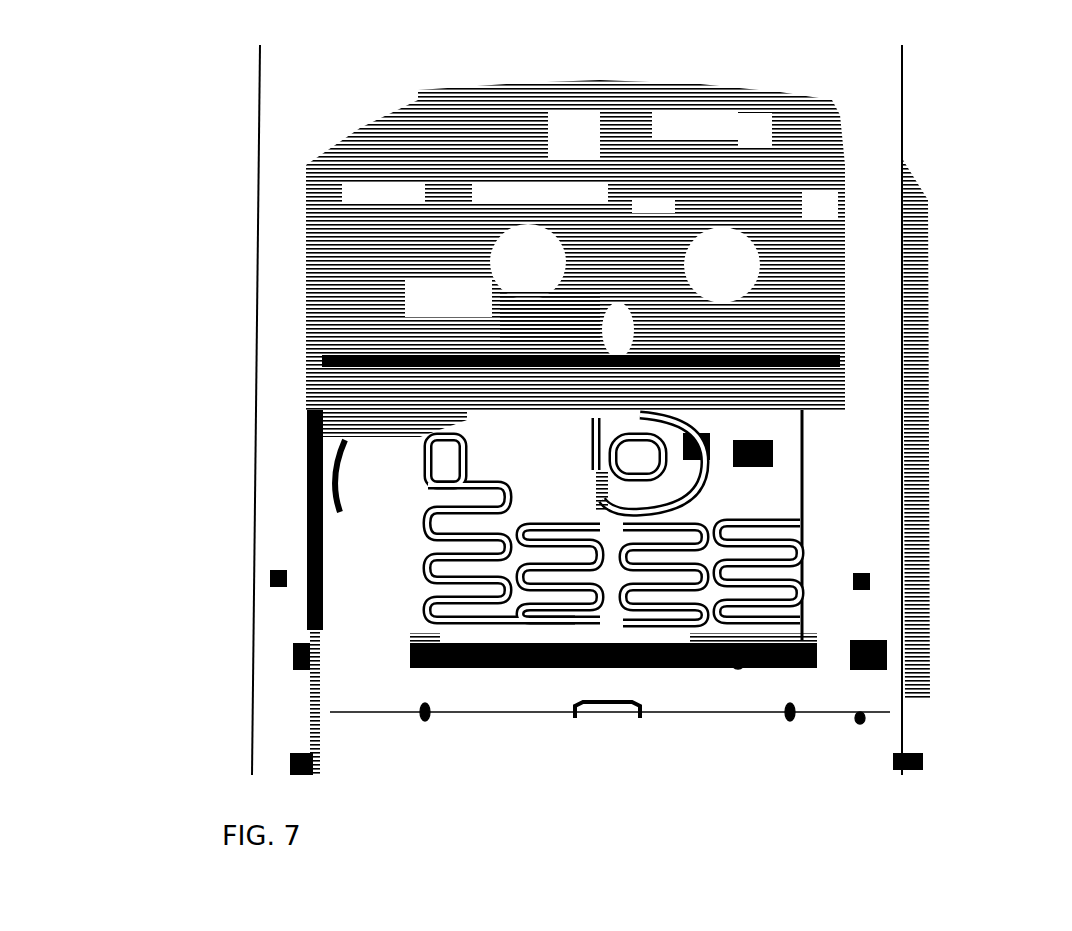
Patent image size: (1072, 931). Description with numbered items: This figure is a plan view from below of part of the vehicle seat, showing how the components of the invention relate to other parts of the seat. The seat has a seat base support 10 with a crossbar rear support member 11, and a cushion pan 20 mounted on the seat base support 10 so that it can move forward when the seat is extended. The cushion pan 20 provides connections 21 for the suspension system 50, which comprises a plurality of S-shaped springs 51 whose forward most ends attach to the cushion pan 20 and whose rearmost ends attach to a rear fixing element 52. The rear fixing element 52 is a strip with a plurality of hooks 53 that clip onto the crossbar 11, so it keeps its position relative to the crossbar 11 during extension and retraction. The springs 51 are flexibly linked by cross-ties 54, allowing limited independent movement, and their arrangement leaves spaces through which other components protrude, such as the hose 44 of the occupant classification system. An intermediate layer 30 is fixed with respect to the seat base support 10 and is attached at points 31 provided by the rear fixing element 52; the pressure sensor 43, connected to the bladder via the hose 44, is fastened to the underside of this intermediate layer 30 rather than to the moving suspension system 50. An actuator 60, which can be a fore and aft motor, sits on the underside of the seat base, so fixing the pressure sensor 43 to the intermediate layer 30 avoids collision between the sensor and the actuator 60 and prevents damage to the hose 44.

The seat base support 10 is at (322, 578).
The crossbar rear support member 11 is at (730, 703).
The cushion pan 20 is at (815, 270).
The connections 21 is at (545, 318).
The intermediate layer 30 is at (505, 443).
The points 31 is at (748, 662).
The pressure sensor 43 is at (747, 443).
The hose 44 is at (697, 504).
The suspension system 50 is at (795, 583).
The S-shaped springs 51 is at (655, 590).
The rear fixing element 52 is at (452, 657).
The hooks 53 is at (425, 715).
The cross-ties 54 is at (610, 503).
The actuator 60 is at (805, 380).